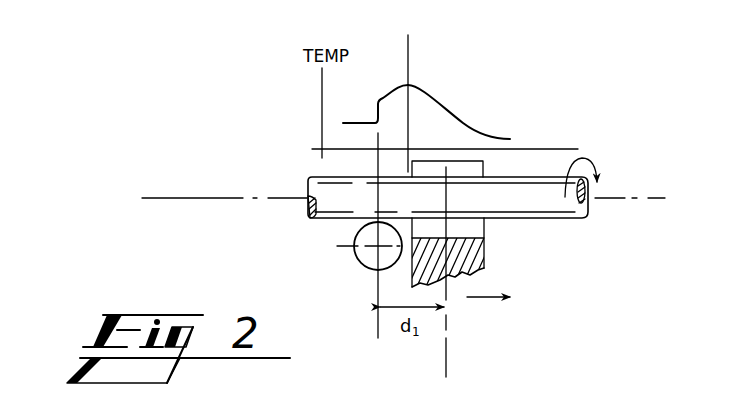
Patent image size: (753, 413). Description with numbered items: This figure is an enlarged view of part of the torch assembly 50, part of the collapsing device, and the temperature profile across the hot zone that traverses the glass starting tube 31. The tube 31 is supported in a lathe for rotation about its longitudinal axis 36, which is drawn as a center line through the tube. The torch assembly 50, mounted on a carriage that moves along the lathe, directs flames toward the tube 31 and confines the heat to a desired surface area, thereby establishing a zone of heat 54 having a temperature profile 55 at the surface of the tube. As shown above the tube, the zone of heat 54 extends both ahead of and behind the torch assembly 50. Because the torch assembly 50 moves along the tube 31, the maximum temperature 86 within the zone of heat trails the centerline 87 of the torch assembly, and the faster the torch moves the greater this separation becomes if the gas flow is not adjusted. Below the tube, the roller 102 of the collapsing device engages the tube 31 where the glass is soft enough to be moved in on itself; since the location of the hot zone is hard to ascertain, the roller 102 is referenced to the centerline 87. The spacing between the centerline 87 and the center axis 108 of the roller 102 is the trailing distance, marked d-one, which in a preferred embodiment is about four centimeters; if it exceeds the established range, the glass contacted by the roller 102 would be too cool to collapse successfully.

The glass starting tube 31 is at (538, 188).
The longitudinal axis 36 is at (198, 198).
The torch assembly 50 is at (492, 254).
The zone of heat 54 is at (460, 92).
The temperature profile 55 is at (463, 123).
The maximum temperature 86 is at (409, 84).
The centerline of the torch assembly 87 is at (450, 357).
The roller 102 is at (352, 234).
The center axis of the roller 108 is at (372, 283).